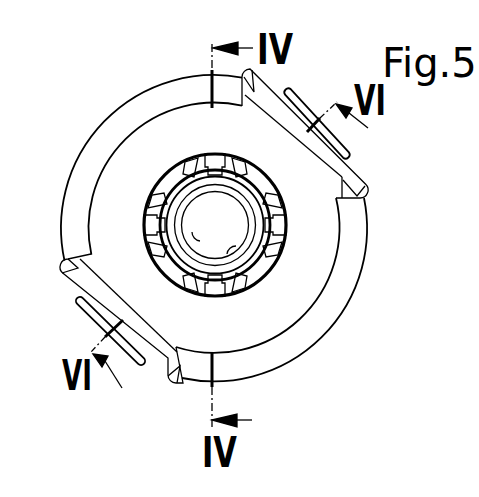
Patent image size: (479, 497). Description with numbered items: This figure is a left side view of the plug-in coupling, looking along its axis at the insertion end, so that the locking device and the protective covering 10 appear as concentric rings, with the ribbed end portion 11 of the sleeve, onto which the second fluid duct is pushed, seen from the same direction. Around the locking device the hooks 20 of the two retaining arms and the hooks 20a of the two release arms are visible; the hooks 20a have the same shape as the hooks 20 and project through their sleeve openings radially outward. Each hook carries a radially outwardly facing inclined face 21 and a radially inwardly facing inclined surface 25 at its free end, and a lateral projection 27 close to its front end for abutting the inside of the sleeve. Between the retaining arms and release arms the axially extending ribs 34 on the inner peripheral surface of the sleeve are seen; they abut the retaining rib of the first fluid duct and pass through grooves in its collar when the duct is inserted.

The protective covering 10 is at (347, 284).
The ribbed end portion 11 is at (167, 290).
The hook 20 is at (155, 185).
The hook 20a is at (273, 182).
The inclined face 21 is at (168, 180).
The inclined surface 25 is at (243, 158).
The lateral projection 27 is at (188, 157).
The axially extending rib 34 is at (145, 223).